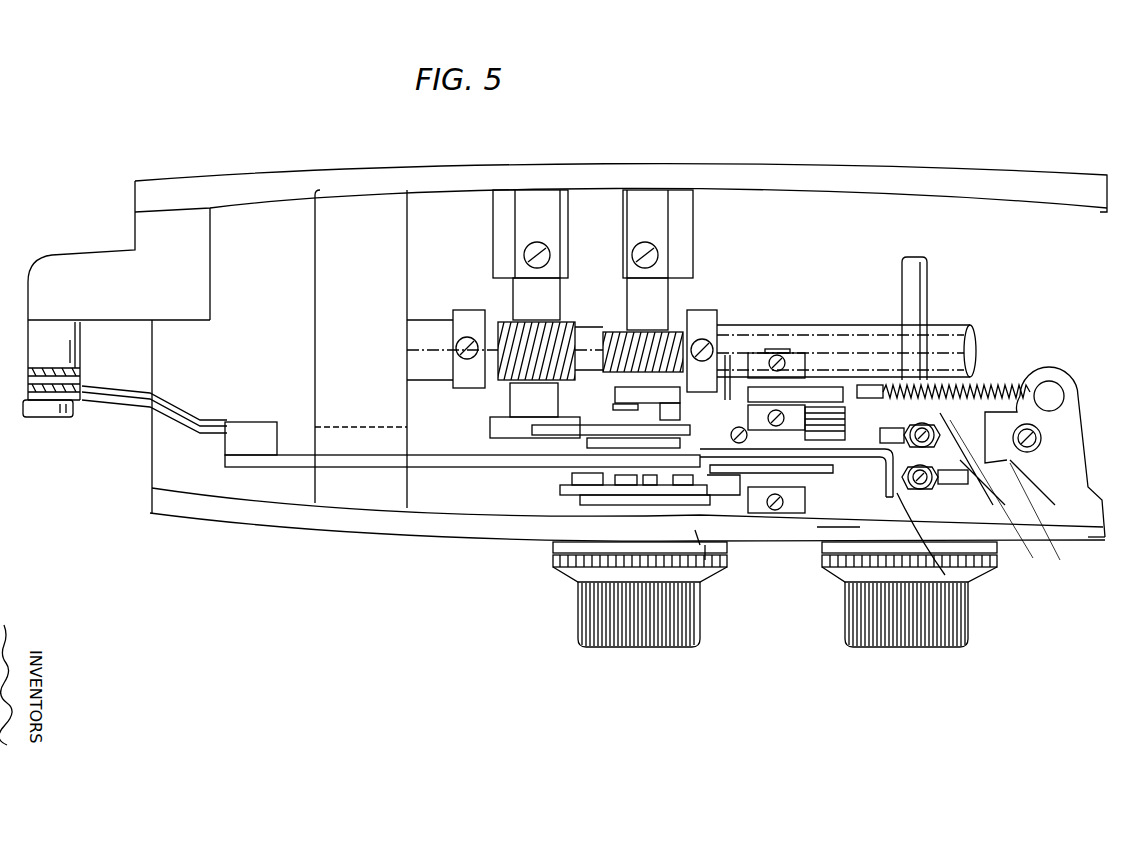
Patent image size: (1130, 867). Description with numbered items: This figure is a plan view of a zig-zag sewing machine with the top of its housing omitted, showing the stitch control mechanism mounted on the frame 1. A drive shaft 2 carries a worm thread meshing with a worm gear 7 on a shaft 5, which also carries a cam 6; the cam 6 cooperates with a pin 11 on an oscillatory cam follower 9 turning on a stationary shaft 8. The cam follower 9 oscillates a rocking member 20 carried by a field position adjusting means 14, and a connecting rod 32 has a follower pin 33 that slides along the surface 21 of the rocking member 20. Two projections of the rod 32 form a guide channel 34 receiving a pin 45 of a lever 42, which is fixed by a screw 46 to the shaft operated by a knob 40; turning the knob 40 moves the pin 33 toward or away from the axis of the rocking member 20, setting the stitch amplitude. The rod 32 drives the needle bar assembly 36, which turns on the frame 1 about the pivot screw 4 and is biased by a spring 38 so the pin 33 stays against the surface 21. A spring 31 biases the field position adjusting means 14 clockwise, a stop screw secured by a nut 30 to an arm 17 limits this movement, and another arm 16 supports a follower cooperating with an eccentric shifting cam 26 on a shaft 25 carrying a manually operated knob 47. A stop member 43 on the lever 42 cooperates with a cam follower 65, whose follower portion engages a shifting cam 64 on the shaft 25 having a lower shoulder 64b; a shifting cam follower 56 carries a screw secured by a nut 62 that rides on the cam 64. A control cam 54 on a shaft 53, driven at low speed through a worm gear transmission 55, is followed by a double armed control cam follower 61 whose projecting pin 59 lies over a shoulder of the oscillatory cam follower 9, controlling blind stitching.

The frame 1 is at (357, 237).
The drive shaft 2 is at (427, 335).
The pivot screw 4 is at (55, 418).
The shaft 5 is at (672, 300).
The cam 6 is at (620, 330).
The worm gear 7 is at (605, 330).
The stationary shaft 8 is at (777, 350).
The oscillatory cam follower 9 is at (733, 352).
The pin 11 is at (643, 407).
The field position adjusting means 14 is at (833, 385).
The arm 16 is at (1010, 463).
The arm 17 is at (1070, 540).
The rocking member 20 is at (783, 437).
The surface 21 is at (823, 477).
The shaft 25 is at (914, 258).
The eccentric shifting cam 26 is at (950, 420).
The nut 30 is at (1040, 438).
The spring 31 is at (988, 388).
The connecting rod 32 is at (357, 467).
The follower pin 33 is at (822, 383).
The guide channel 34 is at (690, 485).
The needle bar assembly 36 is at (58, 338).
The spring 38 is at (83, 415).
The knob 40 is at (642, 648).
The lever 42 is at (633, 482).
The stop member 43 is at (565, 485).
The pin 45 is at (705, 560).
The screw 46 is at (578, 625).
The knob 47 is at (908, 648).
The shaft 53 is at (523, 300).
The control cam 54 is at (513, 428).
The worm gear transmission 55 is at (500, 387).
The shifting cam follower 56 is at (745, 510).
The projecting pin 59 is at (700, 545).
The control cam follower 61 is at (577, 435).
The nut 62 is at (970, 598).
The shifting cam 64 is at (953, 492).
The shoulder 64b is at (919, 445).
The cam follower 65 is at (817, 527).